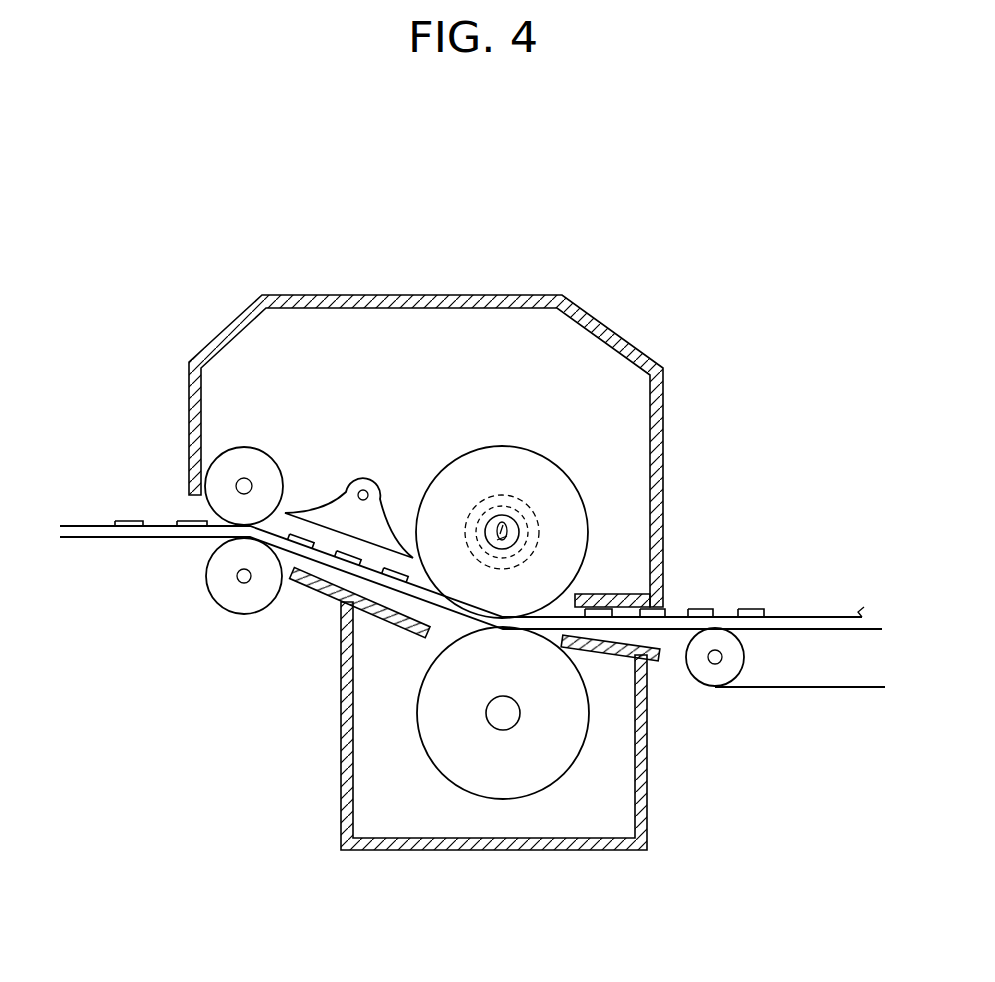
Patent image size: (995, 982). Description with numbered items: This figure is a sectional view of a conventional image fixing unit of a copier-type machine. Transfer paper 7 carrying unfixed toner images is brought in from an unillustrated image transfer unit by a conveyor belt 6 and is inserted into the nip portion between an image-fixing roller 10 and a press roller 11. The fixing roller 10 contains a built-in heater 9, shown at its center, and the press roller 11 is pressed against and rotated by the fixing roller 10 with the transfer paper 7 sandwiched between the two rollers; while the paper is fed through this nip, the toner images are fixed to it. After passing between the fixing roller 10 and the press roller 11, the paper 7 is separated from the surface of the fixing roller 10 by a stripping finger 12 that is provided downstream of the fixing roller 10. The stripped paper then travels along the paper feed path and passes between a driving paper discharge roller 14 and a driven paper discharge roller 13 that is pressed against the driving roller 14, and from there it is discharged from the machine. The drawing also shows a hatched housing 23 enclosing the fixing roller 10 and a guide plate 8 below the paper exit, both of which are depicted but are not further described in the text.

The conveyor belt 6 is at (793, 629).
The transfer paper 7 is at (727, 611).
The guide plate 8 is at (651, 659).
The heater 9 is at (519, 508).
The image-fixing roller 10 is at (503, 446).
The press roller 11 is at (518, 779).
The stripping finger 12 is at (368, 522).
The driven paper discharge roller 13 is at (222, 483).
The driving paper discharge roller 14 is at (216, 579).
The housing 23 is at (654, 324).